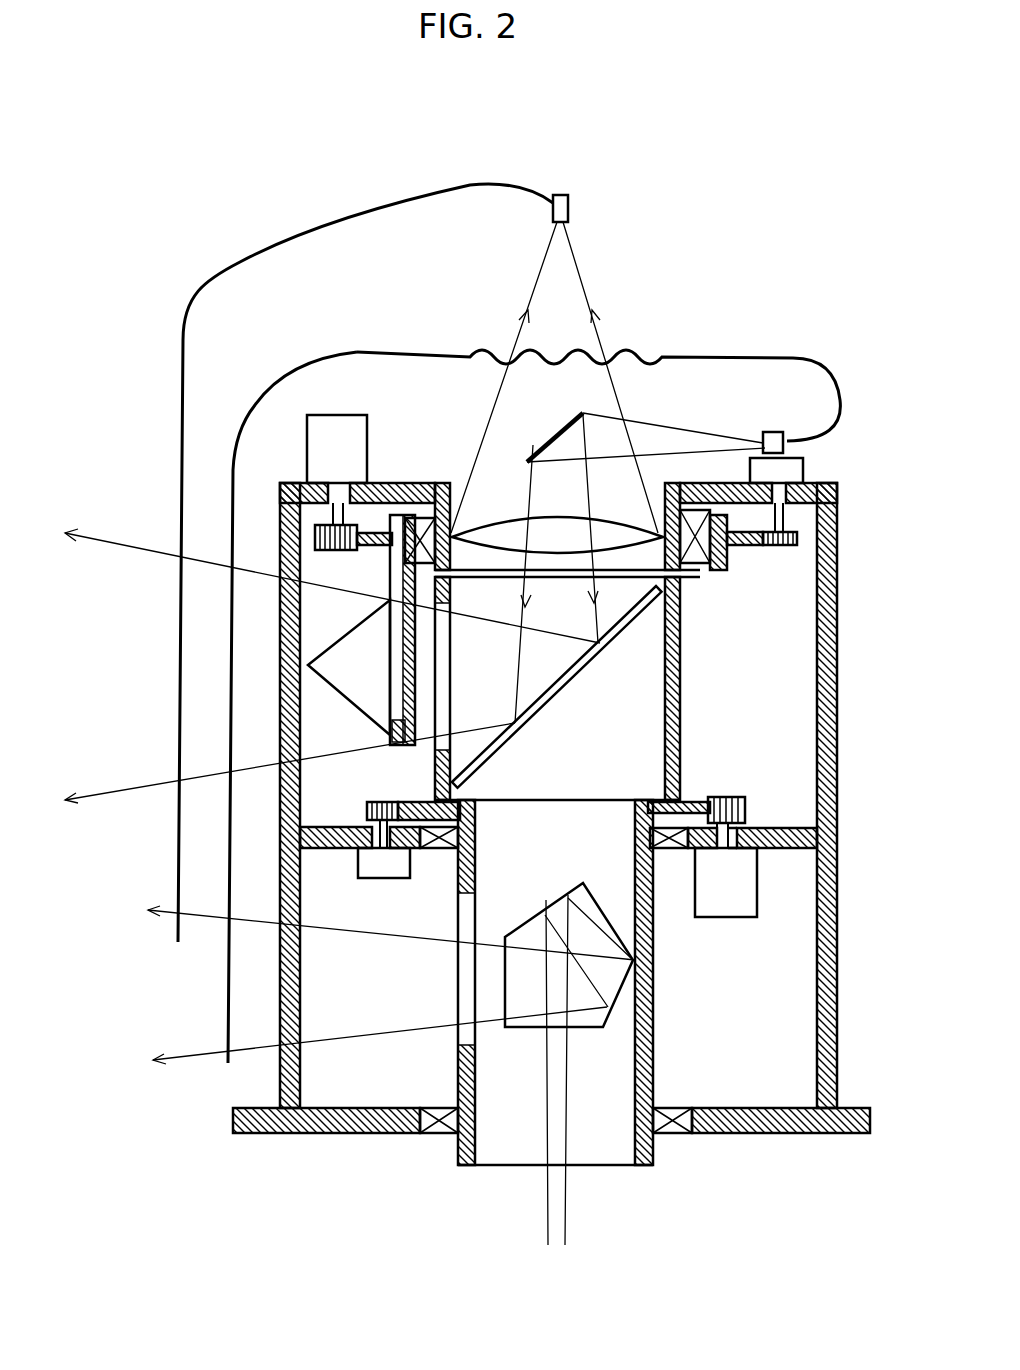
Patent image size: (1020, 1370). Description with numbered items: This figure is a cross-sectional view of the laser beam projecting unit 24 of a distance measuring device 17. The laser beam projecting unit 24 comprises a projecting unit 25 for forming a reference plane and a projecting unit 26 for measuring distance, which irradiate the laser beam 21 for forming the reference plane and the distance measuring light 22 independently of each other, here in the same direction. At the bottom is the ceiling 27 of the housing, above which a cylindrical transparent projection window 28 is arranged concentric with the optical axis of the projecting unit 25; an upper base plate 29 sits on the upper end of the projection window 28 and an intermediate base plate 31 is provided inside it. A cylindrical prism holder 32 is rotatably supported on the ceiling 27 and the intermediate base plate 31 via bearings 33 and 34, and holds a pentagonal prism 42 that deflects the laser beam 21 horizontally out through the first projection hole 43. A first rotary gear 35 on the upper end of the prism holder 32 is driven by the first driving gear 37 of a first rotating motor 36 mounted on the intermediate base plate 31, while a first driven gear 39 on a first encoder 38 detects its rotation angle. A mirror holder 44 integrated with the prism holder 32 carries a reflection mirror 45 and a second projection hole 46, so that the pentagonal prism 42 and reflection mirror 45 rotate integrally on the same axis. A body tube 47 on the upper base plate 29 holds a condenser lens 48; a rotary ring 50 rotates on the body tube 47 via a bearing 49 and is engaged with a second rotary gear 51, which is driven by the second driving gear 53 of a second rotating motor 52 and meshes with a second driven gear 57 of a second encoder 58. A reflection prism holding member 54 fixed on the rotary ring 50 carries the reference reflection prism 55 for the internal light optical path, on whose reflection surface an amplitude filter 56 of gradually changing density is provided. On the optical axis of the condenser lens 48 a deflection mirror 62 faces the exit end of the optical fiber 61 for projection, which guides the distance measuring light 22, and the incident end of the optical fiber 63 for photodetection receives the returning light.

The distance measuring device 17 is at (866, 345).
The laser beam for forming the reference plane 21 is at (193, 1058).
The distance measuring light 22 is at (112, 538).
The laser beam projecting unit 24 is at (870, 893).
The projecting unit for forming reference plane 25 is at (732, 1003).
The projecting unit for measuring distance 26 is at (720, 683).
The ceiling 27 is at (838, 1105).
The projection window 28 is at (837, 730).
The upper base plate 29 is at (805, 475).
The intermediate base plate 31 is at (780, 826).
The prism holder 32 is at (655, 1065).
The bearing 33 is at (672, 1135).
The bearing 34 is at (667, 850).
The first rotary gear 35 is at (693, 793).
The first rotating motor 36 is at (757, 897).
The first driving gear 37 is at (735, 797).
The first encoder 38 is at (380, 878).
The first driven gear 39 is at (300, 803).
The pentagonal prism 42 is at (552, 898).
The first projection hole 43 is at (467, 915).
The mirror holder 44 is at (682, 657).
The reflection mirror 45 is at (620, 647).
The second projection hole 46 is at (447, 702).
The body tube 47 is at (690, 577).
The condenser lens 48 is at (500, 517).
The bearing 49 is at (717, 567).
The rotary ring 50 is at (737, 478).
The second rotary gear 51 is at (745, 552).
The second rotating motor 52 is at (368, 447).
The second driving gear 53 is at (315, 535).
The reflection prism holding member 54 is at (356, 541).
The reference reflection prism 55 is at (337, 625).
The amplitude filter 56 is at (415, 665).
The second driven gear 57 is at (812, 535).
The second encoder 58 is at (805, 458).
The optical fiber for projection 61 is at (358, 352).
The deflection mirror 62 is at (545, 442).
The optical fiber for photodetection 63 is at (317, 220).